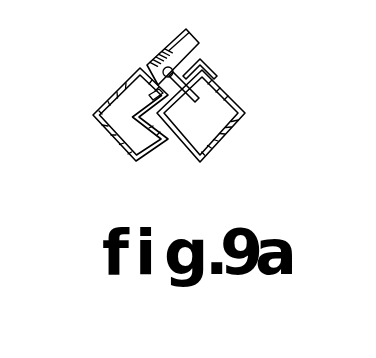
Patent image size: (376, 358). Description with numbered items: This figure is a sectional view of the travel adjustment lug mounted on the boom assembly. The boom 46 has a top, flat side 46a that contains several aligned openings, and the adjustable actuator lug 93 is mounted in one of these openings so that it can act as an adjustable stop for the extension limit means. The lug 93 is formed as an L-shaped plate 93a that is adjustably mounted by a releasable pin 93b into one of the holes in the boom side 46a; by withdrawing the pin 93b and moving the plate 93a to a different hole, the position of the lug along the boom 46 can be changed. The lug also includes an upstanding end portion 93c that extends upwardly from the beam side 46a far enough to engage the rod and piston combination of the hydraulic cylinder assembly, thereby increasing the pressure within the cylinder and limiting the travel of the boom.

The boom 46 is at (236, 107).
The top flat side of the boom 46a is at (190, 61).
The adjustable actuator lug 93 is at (197, 42).
The L-shaped plate 93a is at (153, 100).
The releasable pin 93b is at (190, 94).
The upstanding end portion 93c is at (167, 44).